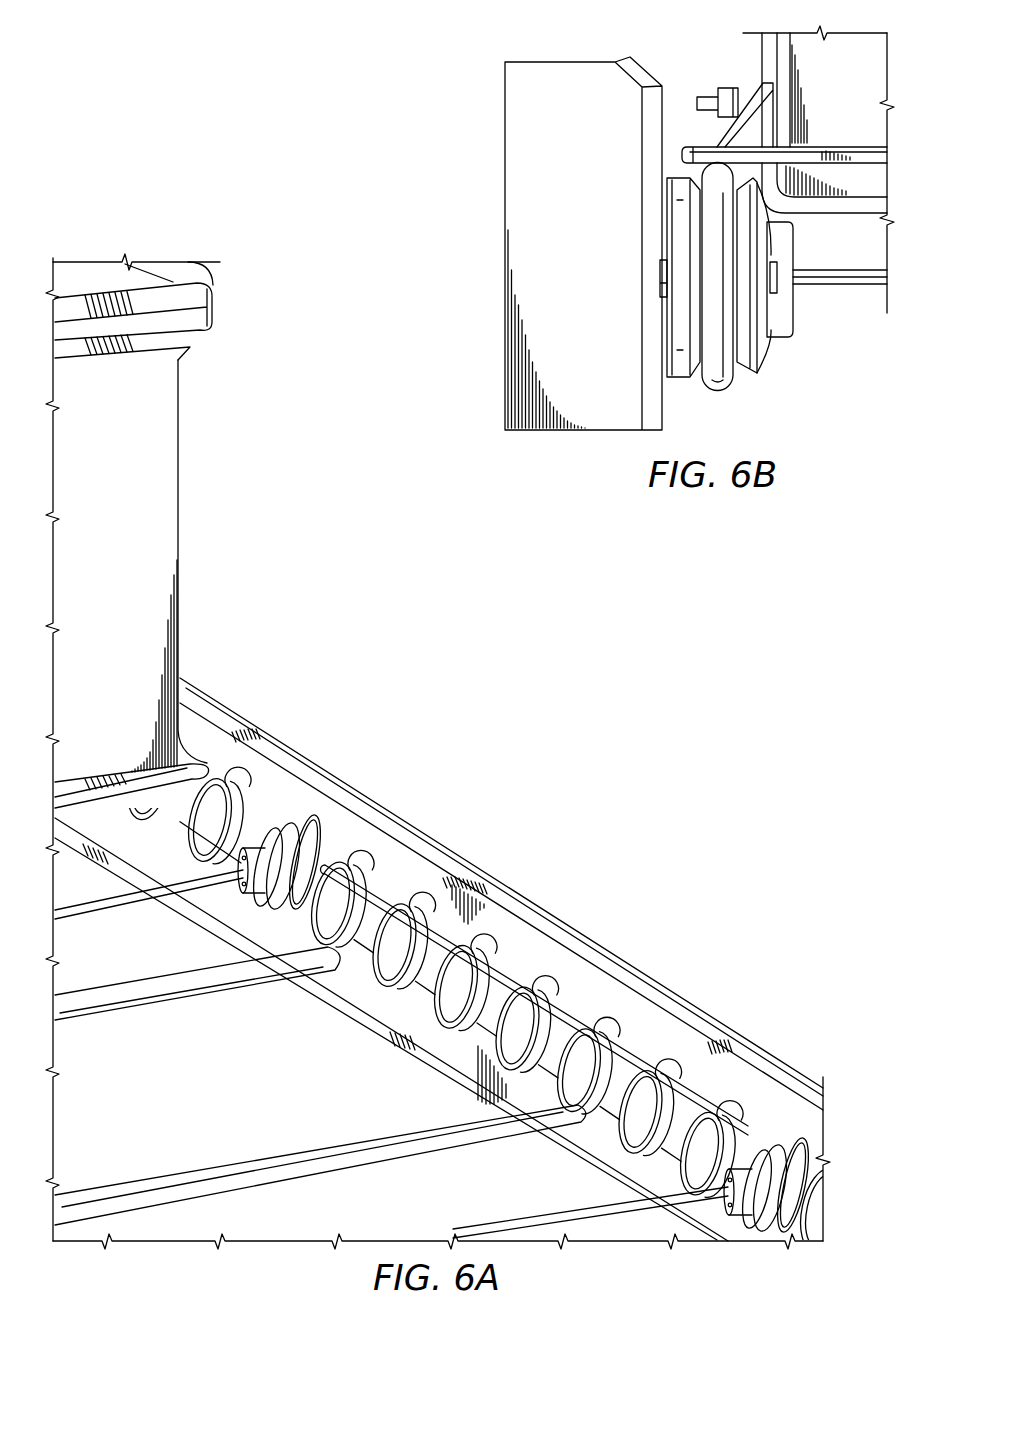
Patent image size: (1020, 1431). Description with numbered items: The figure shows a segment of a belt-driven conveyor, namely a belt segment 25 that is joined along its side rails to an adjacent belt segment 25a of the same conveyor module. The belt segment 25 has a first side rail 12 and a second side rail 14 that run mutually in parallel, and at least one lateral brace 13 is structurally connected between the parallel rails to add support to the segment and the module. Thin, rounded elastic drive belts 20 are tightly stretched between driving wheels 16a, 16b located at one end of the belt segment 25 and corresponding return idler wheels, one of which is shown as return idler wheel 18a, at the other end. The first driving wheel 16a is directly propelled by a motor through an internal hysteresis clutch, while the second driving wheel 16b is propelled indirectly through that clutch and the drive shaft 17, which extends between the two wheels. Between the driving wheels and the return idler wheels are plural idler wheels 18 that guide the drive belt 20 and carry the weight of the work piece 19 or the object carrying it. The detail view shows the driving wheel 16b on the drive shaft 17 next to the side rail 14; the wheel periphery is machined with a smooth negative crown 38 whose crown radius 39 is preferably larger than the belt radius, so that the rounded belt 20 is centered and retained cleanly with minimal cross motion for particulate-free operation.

In FIG. 6A, the first side rail 12 is at (700, 1010).
In FIG. 6A, the lateral brace 13 is at (184, 1000).
In FIG. 6B, the second side rail 14 is at (583, 62).
In FIG. 6A, the first driving wheel 16a is at (311, 826).
In FIG. 6B, the second driving wheel 16b is at (806, 345).
In FIG. 6B, the drive shaft 17 is at (842, 286).
In FIG. 6A, the drive shaft 17 is at (107, 906).
In FIG. 6A, the idler wheel 18 is at (615, 1022).
In FIG. 6A, the return idler wheel 18a is at (372, 866).
In FIG. 6B, the work piece 19 is at (844, 109).
In FIG. 6A, the work piece 19 is at (180, 520).
In FIG. 6B, the drive belt 20 is at (717, 392).
In FIG. 6A, the drive belt 20 is at (510, 975).
In FIG. 6A, the belt segment 25 is at (601, 922).
In FIG. 6A, the adjacent belt segment 25a is at (284, 719).
In FIG. 6B, the negative crown 38 is at (757, 367).
In FIG. 6B, the crown radius 39 is at (699, 379).